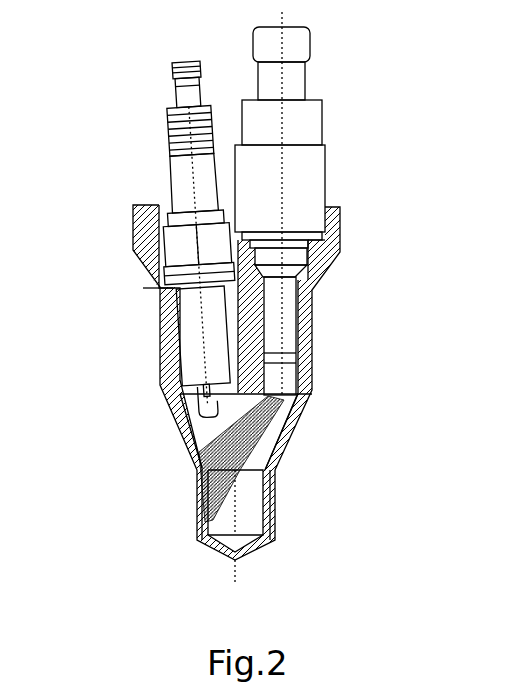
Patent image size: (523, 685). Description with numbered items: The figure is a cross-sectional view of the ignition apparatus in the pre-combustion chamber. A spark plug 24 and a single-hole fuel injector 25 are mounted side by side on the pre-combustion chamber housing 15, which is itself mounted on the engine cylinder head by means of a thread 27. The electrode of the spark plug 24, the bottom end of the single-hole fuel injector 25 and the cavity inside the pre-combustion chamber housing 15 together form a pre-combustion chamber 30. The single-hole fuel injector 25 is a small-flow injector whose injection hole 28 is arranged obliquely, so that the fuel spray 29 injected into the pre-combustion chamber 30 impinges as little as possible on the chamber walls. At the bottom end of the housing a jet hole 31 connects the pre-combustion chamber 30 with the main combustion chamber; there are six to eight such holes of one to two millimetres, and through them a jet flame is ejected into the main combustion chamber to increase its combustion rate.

The pre-combustion chamber housing 15 is at (177, 337).
The spark plug 24 is at (129, 240).
The single-hole fuel injector 25 is at (356, 203).
The thread 27 is at (143, 492).
The injection hole 28 is at (338, 414).
The fuel spray 29 is at (329, 442).
The pre-combustion chamber 30 is at (343, 511).
The jet hole 31 is at (139, 538).